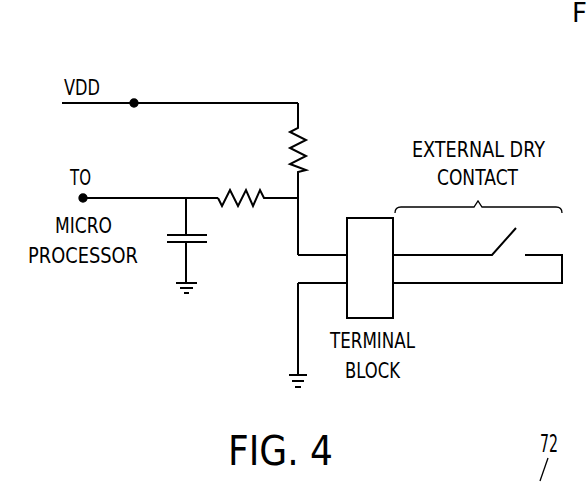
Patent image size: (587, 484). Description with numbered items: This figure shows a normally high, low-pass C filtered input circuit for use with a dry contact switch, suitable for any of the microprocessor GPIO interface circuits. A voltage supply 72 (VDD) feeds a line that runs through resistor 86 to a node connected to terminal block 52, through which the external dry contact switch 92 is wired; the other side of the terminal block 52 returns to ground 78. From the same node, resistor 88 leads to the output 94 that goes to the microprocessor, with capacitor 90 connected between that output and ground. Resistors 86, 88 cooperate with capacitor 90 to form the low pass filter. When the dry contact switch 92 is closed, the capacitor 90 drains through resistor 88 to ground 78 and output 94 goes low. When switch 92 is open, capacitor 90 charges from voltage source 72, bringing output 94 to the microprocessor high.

The voltage supply 72 is at (97, 72).
The resistor 86 is at (303, 161).
The output 94 is at (142, 197).
The resistor 88 is at (232, 189).
The capacitor 90 is at (203, 245).
The terminal block 52 is at (367, 218).
The dry contact switch 92 is at (503, 243).
The ground 78 is at (298, 347).